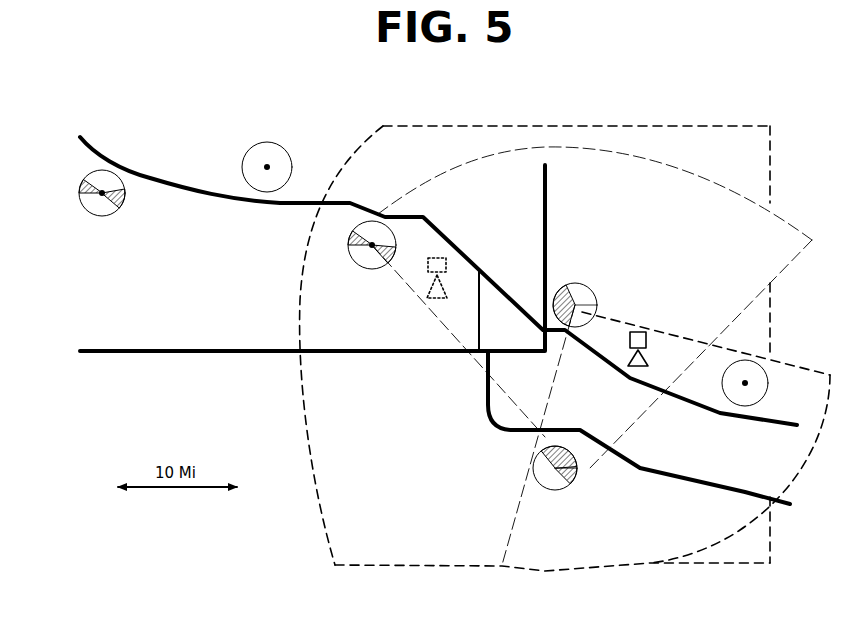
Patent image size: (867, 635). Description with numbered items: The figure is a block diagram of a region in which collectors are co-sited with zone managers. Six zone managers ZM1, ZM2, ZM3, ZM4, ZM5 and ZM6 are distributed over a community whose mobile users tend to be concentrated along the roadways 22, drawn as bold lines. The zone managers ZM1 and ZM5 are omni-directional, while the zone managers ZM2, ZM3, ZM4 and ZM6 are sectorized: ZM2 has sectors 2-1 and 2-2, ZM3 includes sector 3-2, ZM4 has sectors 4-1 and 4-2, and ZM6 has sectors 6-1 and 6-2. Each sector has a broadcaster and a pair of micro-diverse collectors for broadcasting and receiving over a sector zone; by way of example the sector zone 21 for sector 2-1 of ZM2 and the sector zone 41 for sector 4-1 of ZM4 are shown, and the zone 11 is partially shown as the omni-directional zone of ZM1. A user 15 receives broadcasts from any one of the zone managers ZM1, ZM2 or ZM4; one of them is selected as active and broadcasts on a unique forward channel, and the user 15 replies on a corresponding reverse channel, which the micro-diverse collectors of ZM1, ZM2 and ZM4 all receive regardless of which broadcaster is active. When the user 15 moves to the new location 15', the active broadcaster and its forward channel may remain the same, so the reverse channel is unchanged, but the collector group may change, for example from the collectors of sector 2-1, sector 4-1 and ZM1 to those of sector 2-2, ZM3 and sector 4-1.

The zone 11 is at (491, 125).
The sector zone 41 is at (732, 188).
The sector zone 21 is at (788, 363).
The roadways 22 is at (447, 238).
The user 15 is at (532, 405).
The user location 15' is at (419, 296).
The zone manager ZM1 is at (757, 335).
The zone manager ZM2 is at (607, 281).
The zone manager ZM3 is at (359, 281).
The zone manager ZM4 is at (527, 476).
The zone manager ZM5 is at (301, 114).
The zone manager ZM6 is at (94, 212).
The sector 2-1 is at (602, 307).
The sector 2-2 is at (562, 292).
The sector 3-2 is at (368, 270).
The sector 4-1 is at (565, 449).
The sector 4-2 is at (577, 480).
The sector 6-1 is at (125, 196).
The sector 6-2 is at (80, 183).